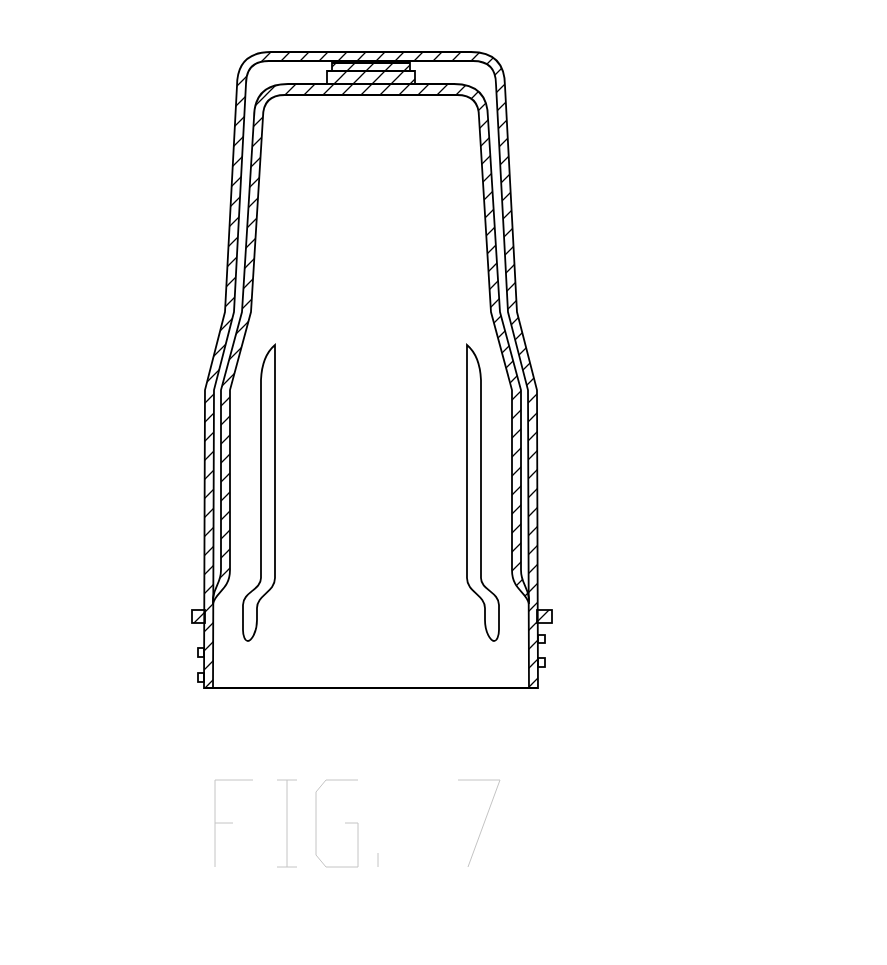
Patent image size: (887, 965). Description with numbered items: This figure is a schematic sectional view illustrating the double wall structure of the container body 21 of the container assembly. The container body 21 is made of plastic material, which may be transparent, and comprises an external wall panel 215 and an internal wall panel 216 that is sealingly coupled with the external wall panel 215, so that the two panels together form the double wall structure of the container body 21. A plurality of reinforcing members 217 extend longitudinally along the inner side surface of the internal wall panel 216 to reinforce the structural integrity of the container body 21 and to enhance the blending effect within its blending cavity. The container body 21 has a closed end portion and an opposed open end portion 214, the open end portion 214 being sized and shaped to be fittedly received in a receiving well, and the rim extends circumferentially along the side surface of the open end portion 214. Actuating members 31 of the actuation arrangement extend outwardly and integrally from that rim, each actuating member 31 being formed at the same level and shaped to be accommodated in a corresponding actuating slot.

The container body 21 is at (504, 370).
The external wall panel 215 is at (537, 393).
The internal wall panel 216 is at (521, 522).
The reinforcing members 217 is at (473, 451).
The open end portion 214 is at (553, 638).
The actuating members 31 is at (193, 622).